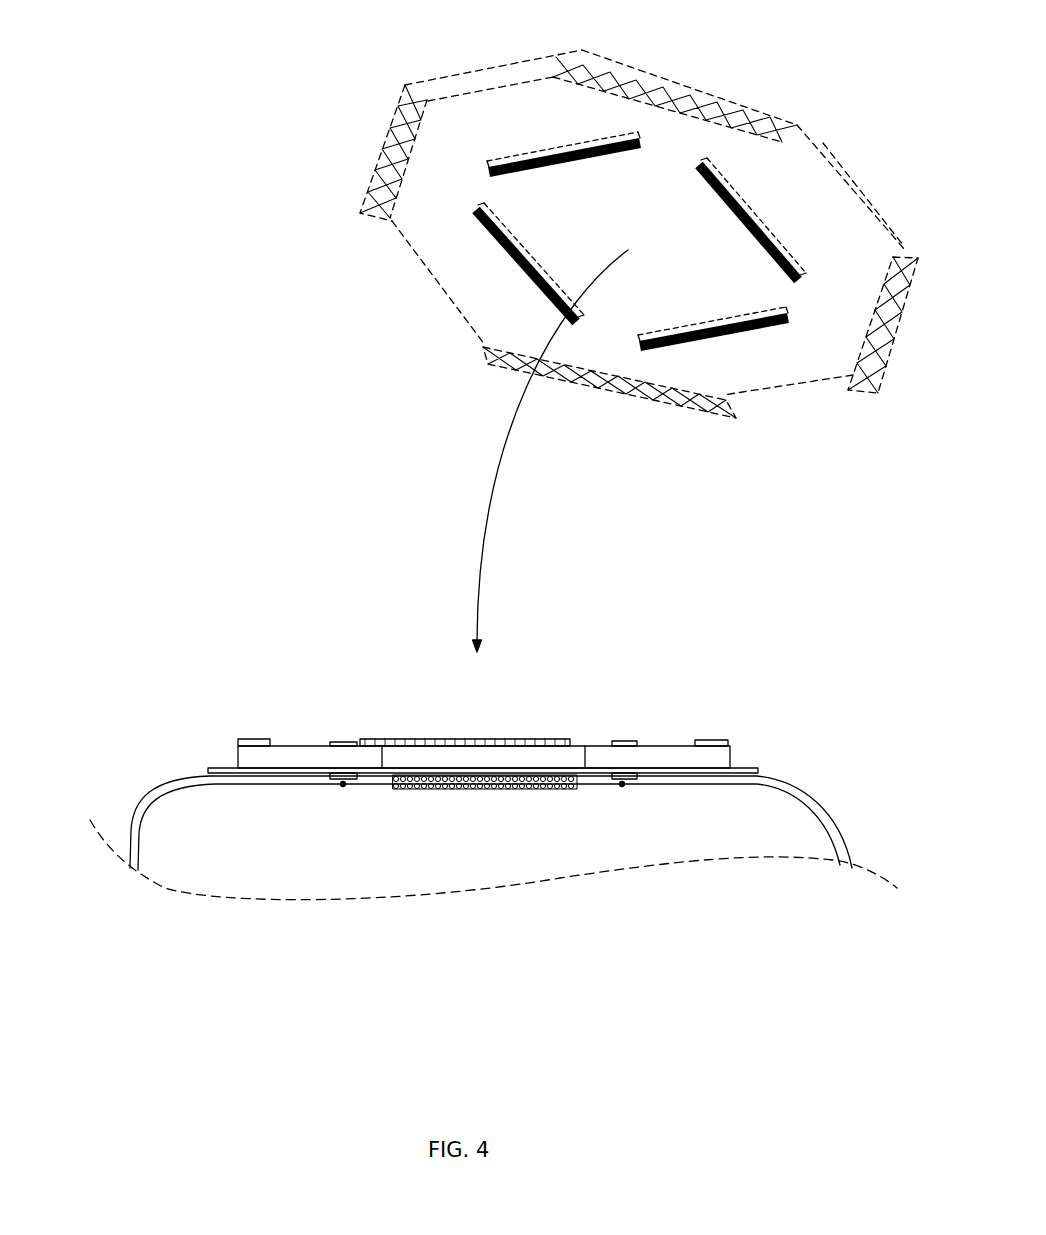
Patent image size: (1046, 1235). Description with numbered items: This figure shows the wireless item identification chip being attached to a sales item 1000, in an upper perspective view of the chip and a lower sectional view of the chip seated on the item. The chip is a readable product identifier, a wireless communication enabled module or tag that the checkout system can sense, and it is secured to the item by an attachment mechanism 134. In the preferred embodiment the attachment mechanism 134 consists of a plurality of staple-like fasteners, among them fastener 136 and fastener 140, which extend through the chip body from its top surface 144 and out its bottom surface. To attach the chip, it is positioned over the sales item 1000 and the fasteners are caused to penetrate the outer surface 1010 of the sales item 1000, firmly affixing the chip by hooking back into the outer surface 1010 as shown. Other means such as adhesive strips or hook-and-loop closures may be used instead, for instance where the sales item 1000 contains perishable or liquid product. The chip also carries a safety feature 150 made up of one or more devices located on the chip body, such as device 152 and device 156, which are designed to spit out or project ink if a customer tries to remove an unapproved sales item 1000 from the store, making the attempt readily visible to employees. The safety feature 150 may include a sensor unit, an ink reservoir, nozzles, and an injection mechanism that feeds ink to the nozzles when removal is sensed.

The attachment mechanism 134 is at (483, 240).
The staple-like fastener 136 is at (590, 146).
The staple-like fastener 140 is at (758, 330).
The top surface 144 is at (312, 745).
The safety feature 150 is at (688, 79).
The ink projecting device 152 is at (770, 110).
The ink projecting device 156 is at (646, 403).
The sales item 1000 is at (132, 947).
The outer surface 1010 is at (830, 818).